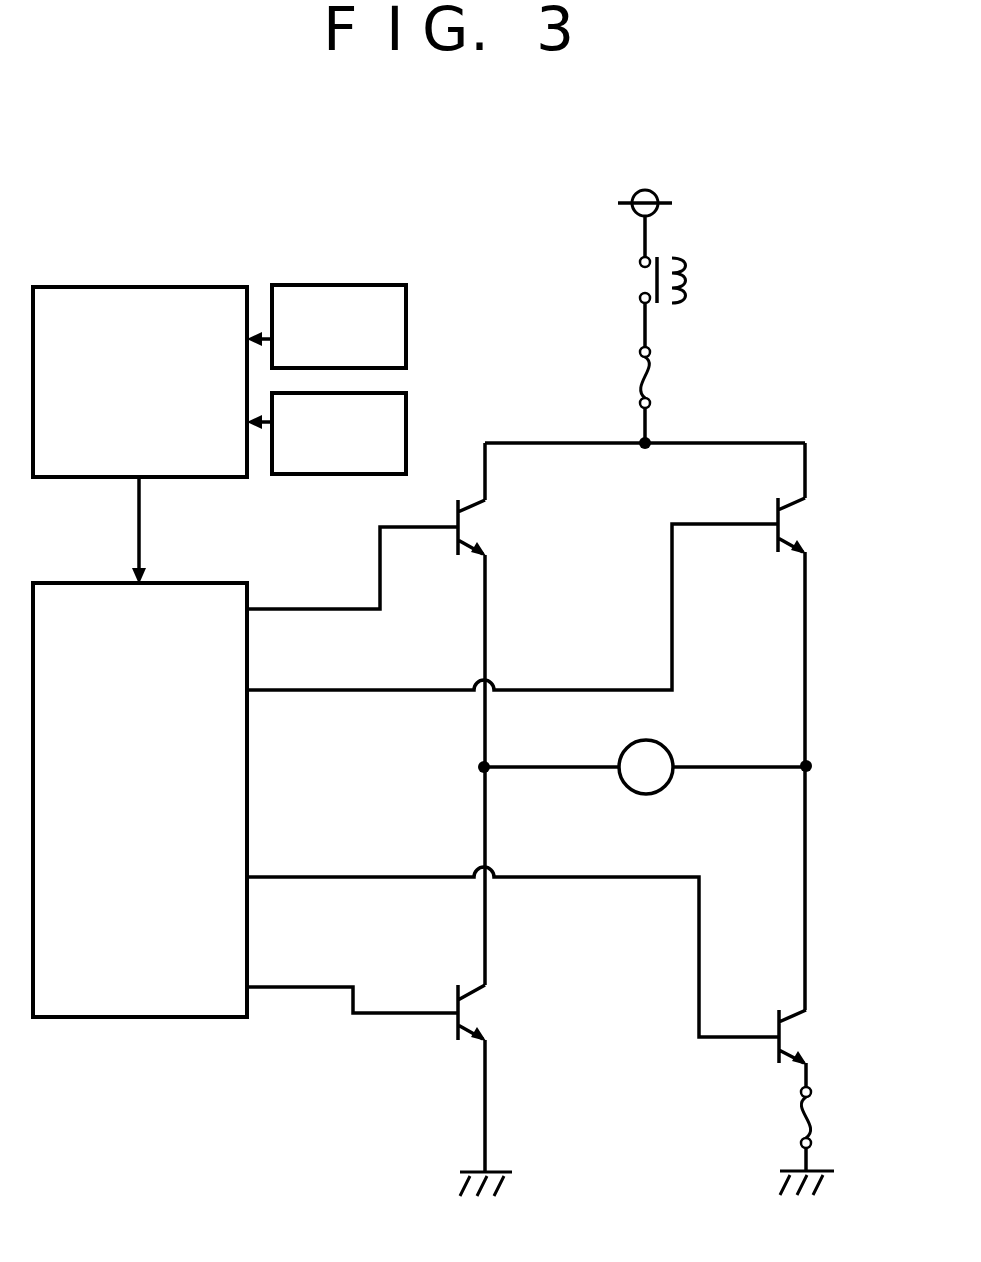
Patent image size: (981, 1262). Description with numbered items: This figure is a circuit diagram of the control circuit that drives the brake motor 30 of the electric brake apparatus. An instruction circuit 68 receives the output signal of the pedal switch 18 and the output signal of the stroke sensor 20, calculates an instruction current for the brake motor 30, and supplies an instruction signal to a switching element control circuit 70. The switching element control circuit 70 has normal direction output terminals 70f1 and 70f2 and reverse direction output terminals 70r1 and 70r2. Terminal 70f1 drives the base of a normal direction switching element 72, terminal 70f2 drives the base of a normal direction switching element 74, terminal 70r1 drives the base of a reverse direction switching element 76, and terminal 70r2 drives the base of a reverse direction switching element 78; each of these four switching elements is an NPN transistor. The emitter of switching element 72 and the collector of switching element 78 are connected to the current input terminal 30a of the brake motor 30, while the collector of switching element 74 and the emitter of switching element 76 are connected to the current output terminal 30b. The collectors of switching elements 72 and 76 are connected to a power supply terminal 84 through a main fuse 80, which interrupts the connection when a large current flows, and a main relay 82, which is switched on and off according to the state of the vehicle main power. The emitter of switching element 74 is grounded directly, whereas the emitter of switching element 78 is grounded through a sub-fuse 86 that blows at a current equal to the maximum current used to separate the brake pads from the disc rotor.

The pedal switch 18 is at (406, 310).
The stroke sensor 20 is at (406, 418).
The brake motor 30 is at (655, 742).
The current input terminal 30a is at (712, 764).
The current output terminal 30b is at (525, 770).
The instruction circuit 68 is at (180, 286).
The switching element control circuit 70 is at (140, 780).
The reverse direction output terminal 70r1 is at (250, 607).
The normal direction output terminal 70f1 is at (250, 688).
The reverse direction output terminal 70r2 is at (250, 875).
The normal direction output terminal 70f2 is at (250, 985).
The normal direction switching element 72 is at (795, 508).
The normal direction switching element 74 is at (477, 1000).
The reverse direction switching element 76 is at (472, 510).
The reverse direction switching element 78 is at (797, 1024).
The main fuse 80 is at (652, 362).
The main relay 82 is at (665, 258).
The power supply terminal 84 is at (655, 192).
The sub-fuse 86 is at (813, 1118).